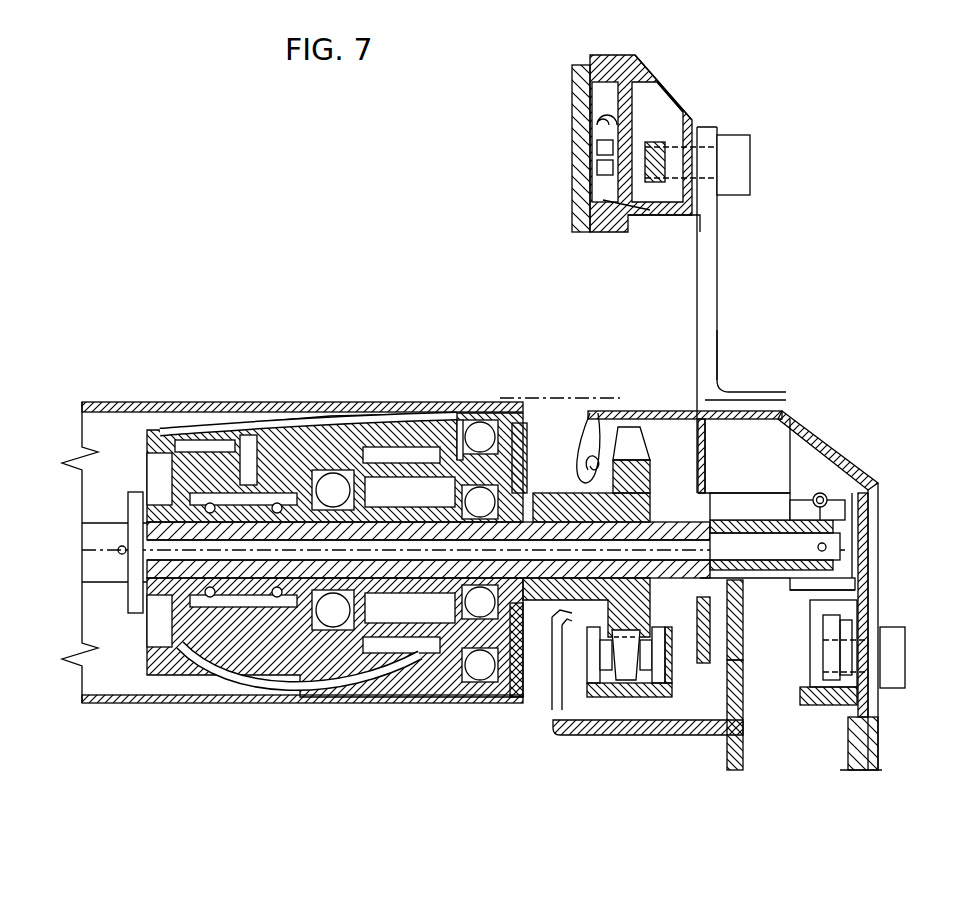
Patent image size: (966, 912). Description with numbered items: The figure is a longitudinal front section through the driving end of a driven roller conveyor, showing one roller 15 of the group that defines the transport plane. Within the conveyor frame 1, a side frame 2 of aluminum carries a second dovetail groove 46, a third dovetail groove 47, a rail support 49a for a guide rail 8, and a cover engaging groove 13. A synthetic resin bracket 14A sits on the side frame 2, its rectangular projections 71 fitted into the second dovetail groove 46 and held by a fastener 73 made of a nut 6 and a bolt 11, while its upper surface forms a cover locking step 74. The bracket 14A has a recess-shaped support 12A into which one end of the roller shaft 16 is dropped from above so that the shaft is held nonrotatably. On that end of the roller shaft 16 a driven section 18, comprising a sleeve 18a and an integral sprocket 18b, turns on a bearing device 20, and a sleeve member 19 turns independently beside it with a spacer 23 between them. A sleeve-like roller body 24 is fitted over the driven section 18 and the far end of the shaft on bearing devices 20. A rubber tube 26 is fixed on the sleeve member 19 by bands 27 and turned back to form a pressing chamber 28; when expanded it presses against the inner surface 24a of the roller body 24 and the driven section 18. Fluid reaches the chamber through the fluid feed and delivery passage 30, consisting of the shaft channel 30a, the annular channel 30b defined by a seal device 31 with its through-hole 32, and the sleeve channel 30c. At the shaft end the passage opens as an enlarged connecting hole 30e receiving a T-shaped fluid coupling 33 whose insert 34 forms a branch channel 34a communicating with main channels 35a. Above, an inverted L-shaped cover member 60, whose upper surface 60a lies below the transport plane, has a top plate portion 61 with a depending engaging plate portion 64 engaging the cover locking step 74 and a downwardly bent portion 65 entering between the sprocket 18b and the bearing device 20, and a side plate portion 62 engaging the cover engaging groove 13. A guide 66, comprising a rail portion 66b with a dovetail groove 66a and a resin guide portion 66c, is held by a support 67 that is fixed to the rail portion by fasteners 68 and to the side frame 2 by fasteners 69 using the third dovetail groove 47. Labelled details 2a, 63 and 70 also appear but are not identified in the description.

The conveyor frame 1 is at (862, 772).
The side frame 2 is at (735, 772).
The bracket plate 2a is at (845, 592).
The plate nut 6 is at (837, 643).
The guide rail 8 is at (628, 700).
The bolt 11 is at (765, 685).
The recess-shaped support 12A is at (795, 500).
The cover engaging groove 13 is at (880, 650).
The bracket 14A is at (820, 582).
The roller 15 is at (104, 705).
The roller shaft 16 is at (100, 562).
The driven section 18 is at (545, 625).
The sleeve 18a is at (457, 412).
The sprocket 18b is at (628, 330).
The sleeve member 19 is at (228, 620).
The bearing device 20 is at (333, 615).
The spacer 23 is at (410, 650).
The roller body 24 is at (100, 403).
The inner surface of roller body 24a is at (360, 412).
The rubber tube 26 is at (352, 690).
The band 27 is at (195, 672).
The pressing chamber 28 is at (418, 690).
The fluid feed and delivery passage 30 is at (541, 538).
The shaft channel 30a is at (635, 535).
The annular channel 30b is at (258, 660).
The sleeve channel 30c is at (250, 460).
The connecting hole 30e is at (820, 480).
The seal device 31 is at (185, 625).
The through-hole 32 is at (210, 445).
The fluid coupling 33 is at (858, 493).
The insert 34 is at (725, 525).
The branch channel 34a is at (828, 497).
The main channel 35a is at (830, 547).
The second dovetail groove 46 is at (750, 670).
The third dovetail groove 47 is at (835, 705).
The rail support 49a is at (580, 737).
The cover member 60 is at (775, 420).
The upper surface of cover member 60a is at (592, 413).
The top plate portion 61 is at (665, 412).
The side plate portion 62 is at (870, 510).
The member 63 is at (866, 612).
The engaging plate portion 64 is at (722, 392).
The downwardly bent portion 65 is at (600, 395).
The guide 66 is at (605, 238).
The dovetail groove 66a is at (660, 112).
The rail portion 66b is at (648, 220).
The guide portion 66c is at (572, 180).
The support 67 is at (717, 282).
The fastener 68 is at (752, 165).
The fastener 69 is at (895, 690).
The plate 70 is at (680, 700).
The projection 71 is at (708, 665).
The fastener 73 is at (790, 690).
The cover locking step 74 is at (735, 495).